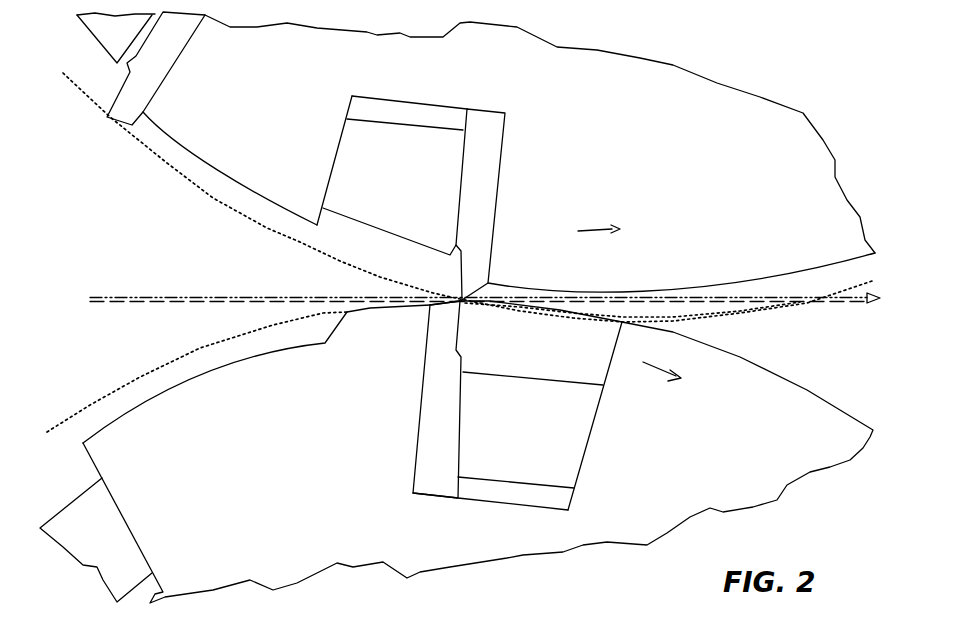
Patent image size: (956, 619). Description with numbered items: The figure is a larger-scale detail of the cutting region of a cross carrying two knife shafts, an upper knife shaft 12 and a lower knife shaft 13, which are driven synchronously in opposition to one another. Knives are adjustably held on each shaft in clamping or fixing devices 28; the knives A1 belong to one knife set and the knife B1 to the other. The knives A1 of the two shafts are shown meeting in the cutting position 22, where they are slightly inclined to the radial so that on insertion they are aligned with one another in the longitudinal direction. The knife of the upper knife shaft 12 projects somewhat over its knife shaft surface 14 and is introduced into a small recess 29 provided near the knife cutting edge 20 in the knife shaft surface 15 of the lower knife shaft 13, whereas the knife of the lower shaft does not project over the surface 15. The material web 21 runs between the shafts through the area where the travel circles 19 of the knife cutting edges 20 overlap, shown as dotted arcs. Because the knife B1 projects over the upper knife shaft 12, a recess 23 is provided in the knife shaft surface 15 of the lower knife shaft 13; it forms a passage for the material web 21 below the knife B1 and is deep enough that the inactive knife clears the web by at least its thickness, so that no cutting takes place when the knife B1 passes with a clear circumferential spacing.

The upper knife shaft 12 is at (646, 185).
The lower knife shaft 13 is at (656, 520).
The knife shaft surface 14 is at (207, 161).
The knife shaft surface 15 is at (806, 276).
The travel circles 19 is at (233, 212).
The knife cutting edge 20 is at (460, 299).
The material web 21 is at (195, 297).
The cutting position 22 is at (467, 311).
The recess 23 is at (140, 397).
The clamping or fixing devices 28 is at (338, 156).
The small recesses 29 is at (549, 362).
The knife A1 is at (498, 150).
The knife B1 is at (157, 75).